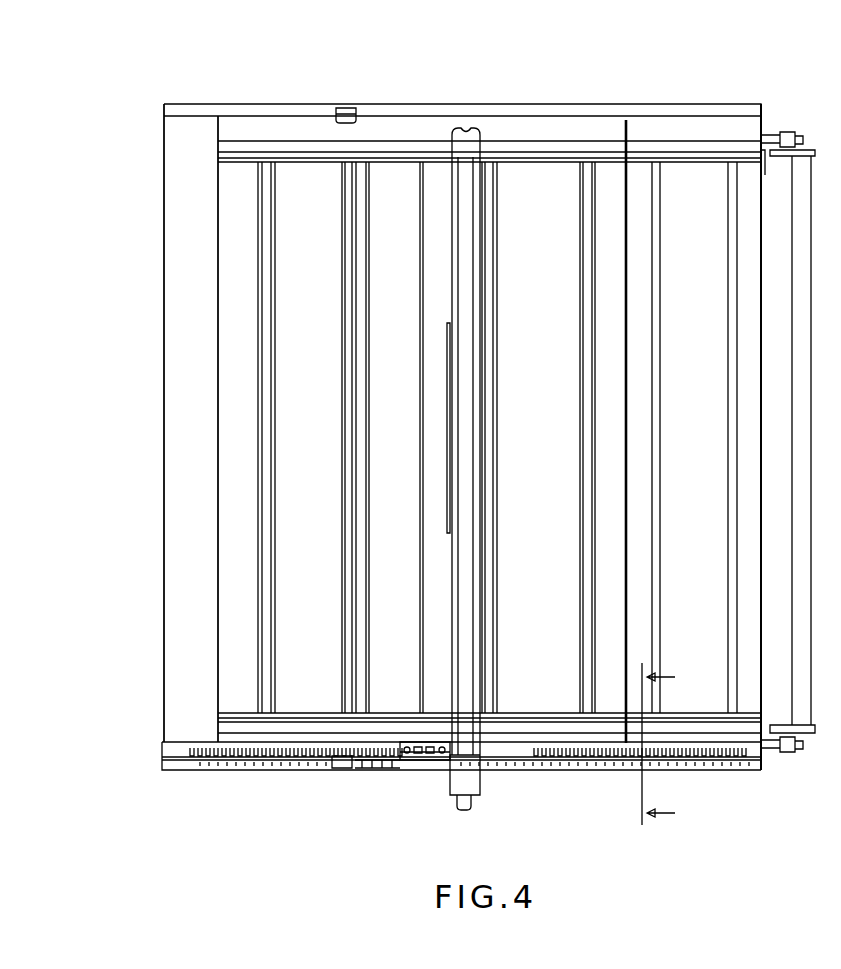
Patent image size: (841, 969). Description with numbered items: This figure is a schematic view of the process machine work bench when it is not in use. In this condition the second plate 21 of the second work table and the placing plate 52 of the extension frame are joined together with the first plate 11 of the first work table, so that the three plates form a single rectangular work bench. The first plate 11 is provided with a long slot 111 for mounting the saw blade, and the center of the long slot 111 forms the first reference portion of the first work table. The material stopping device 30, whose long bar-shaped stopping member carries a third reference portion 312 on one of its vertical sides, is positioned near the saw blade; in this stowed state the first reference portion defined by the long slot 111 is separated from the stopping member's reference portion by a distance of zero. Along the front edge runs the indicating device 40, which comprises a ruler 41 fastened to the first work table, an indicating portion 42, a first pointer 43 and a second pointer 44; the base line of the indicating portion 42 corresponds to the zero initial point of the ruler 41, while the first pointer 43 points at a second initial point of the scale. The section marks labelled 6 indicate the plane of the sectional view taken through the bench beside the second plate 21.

The first plate 11 is at (281, 190).
The second plate 21 is at (709, 190).
The material stopping device 30 is at (508, 439).
The third reference portion 312 is at (480, 250).
The long slot 111 is at (447, 322).
The second pointer 44 is at (340, 106).
The placing plate 52 is at (181, 350).
The indicating device 40 is at (461, 823).
The ruler 41 is at (262, 765).
The indicating portion 42 is at (417, 796).
The first pointer 43 is at (342, 768).
The section line 6- 6 is at (658, 749).